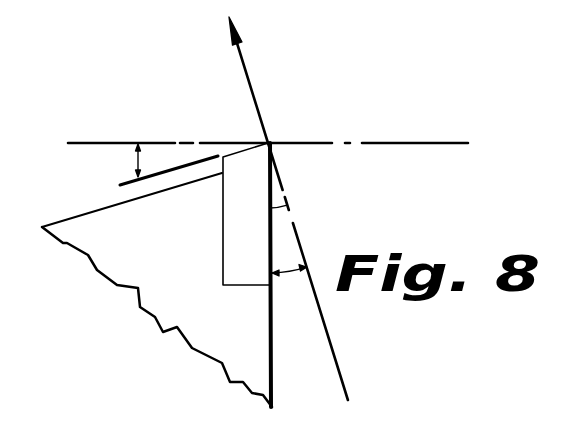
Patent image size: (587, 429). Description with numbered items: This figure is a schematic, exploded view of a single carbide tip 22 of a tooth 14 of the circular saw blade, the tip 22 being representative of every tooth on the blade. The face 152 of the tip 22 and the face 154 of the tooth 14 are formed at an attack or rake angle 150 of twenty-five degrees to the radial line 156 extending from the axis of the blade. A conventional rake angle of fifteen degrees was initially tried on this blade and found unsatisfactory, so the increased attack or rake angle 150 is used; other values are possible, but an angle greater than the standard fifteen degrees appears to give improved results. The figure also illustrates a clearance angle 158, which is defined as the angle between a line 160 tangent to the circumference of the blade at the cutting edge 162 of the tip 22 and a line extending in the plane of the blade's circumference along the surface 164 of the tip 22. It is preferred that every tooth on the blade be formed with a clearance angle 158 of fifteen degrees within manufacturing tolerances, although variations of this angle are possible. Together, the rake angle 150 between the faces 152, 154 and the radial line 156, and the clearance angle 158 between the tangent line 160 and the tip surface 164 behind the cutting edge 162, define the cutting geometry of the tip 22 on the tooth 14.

The tooth 14 is at (182, 282).
The tip 22 is at (257, 225).
The attack or rake angle 150 is at (288, 273).
The face of the tip 152 is at (283, 206).
The face of the tooth 154 is at (275, 353).
The radial line 156 is at (257, 97).
The clearance angle 158 is at (137, 164).
The tangent line 160 is at (425, 142).
The cutting edge 162 is at (270, 141).
The surface of the tip 164 is at (233, 143).